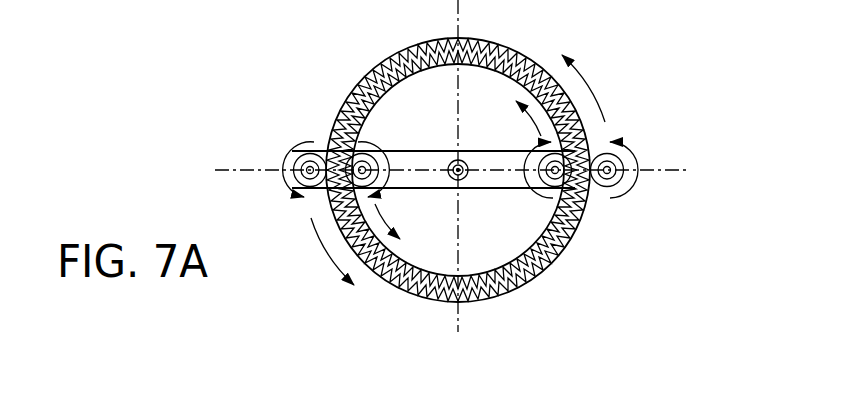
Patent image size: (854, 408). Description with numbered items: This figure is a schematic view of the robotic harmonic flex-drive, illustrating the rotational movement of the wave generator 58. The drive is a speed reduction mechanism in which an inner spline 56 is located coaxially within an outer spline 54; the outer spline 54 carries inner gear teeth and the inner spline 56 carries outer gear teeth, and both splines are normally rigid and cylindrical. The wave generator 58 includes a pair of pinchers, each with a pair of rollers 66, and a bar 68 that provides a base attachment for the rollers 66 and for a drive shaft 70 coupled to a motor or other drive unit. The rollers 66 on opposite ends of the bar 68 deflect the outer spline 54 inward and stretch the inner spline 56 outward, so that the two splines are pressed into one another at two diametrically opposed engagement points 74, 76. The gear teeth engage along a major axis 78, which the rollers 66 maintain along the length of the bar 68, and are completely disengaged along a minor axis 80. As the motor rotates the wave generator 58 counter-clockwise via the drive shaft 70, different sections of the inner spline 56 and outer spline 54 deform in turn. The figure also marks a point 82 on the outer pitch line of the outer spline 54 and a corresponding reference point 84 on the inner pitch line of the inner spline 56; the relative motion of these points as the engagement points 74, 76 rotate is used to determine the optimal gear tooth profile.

The outer spline 54 is at (555, 257).
The inner spline 56 is at (527, 257).
The wave generator 58 is at (442, 188).
The rollers 66 is at (362, 154).
The bar 68 is at (430, 160).
The drive shaft 70 is at (461, 162).
The engagement point 74 is at (333, 157).
The engagement point 76 is at (590, 152).
The major axis 78 is at (472, 173).
The minor axis 80 is at (457, 184).
The point 82 is at (458, 34).
The reference point 84 is at (458, 66).